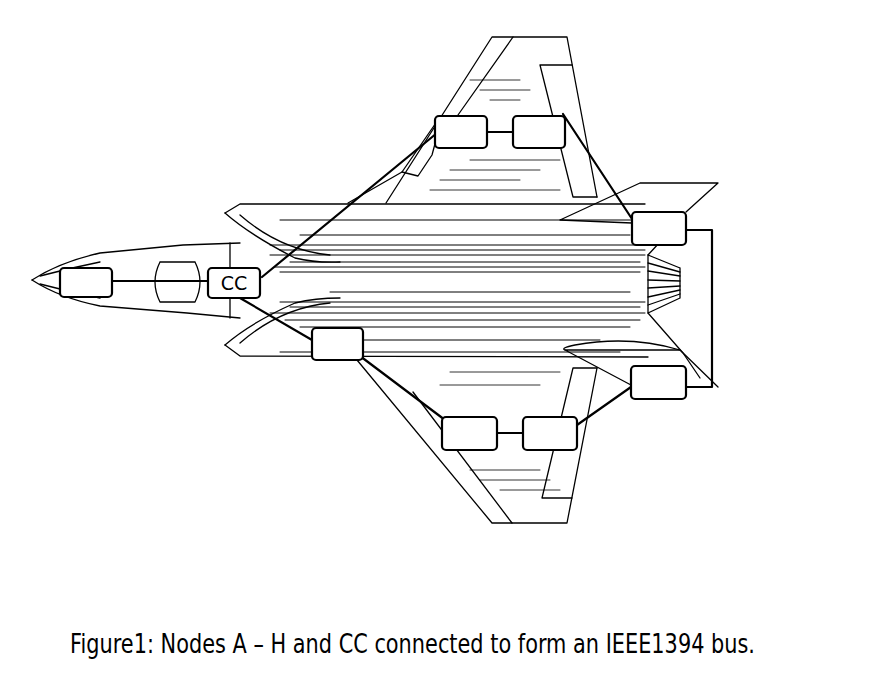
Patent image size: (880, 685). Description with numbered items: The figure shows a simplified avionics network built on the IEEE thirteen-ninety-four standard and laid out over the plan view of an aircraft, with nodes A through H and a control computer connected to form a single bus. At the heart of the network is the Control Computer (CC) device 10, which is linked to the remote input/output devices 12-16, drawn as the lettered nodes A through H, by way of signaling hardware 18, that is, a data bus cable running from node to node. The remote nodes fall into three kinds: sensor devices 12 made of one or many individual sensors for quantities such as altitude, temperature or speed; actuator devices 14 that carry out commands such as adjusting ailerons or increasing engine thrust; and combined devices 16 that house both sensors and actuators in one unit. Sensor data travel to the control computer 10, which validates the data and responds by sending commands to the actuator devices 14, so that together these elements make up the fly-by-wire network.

The control computer device 10 is at (205, 268).
The sensor device 12 is at (62, 297).
The actuator device 14 is at (565, 112).
The combined sensor/actuator device 16 is at (688, 215).
The signaling hardware 18 is at (385, 175).